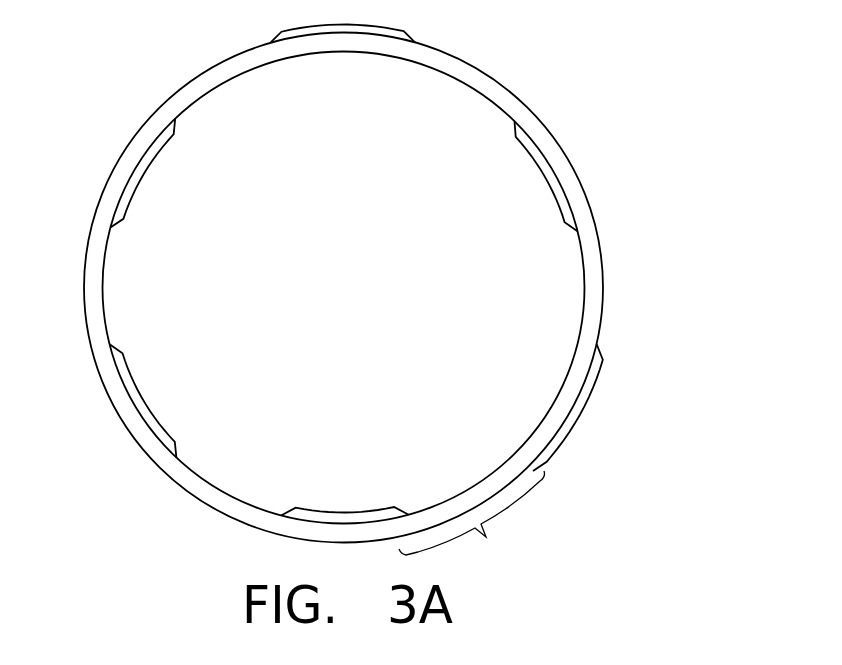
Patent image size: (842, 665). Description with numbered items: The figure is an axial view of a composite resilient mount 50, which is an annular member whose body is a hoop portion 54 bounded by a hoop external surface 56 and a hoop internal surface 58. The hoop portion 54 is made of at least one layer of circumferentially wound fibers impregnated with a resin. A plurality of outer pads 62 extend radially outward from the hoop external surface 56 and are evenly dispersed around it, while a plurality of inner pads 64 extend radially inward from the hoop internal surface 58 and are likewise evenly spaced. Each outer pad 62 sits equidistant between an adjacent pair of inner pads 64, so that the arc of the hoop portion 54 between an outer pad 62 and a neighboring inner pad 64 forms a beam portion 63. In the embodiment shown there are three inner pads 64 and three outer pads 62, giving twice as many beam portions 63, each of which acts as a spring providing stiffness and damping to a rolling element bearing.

The composite resilient mount 50 is at (395, 289).
The hoop portion 54 is at (391, 284).
The hoop external surface 56 is at (590, 201).
The hoop internal surface 58 is at (448, 78).
The outer pad 62 is at (588, 396).
The beam portion 63 is at (472, 516).
The inner pad 64 is at (343, 512).